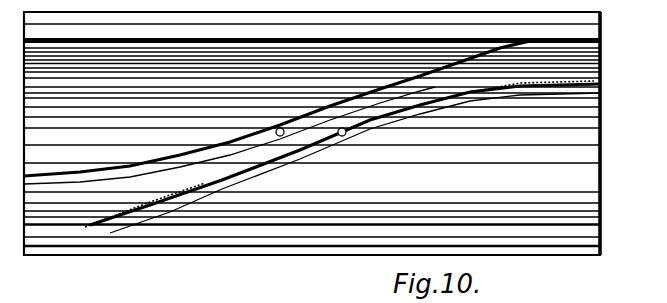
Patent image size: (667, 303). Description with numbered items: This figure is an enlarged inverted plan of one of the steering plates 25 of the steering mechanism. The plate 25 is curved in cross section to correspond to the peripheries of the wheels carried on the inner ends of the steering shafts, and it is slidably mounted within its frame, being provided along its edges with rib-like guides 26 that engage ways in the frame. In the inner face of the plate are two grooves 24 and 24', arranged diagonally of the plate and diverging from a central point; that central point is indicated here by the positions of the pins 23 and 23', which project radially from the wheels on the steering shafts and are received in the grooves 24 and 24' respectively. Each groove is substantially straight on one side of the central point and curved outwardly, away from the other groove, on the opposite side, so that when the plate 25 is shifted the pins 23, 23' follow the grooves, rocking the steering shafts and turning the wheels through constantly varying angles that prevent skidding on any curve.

The pin 23 is at (360, 139).
The pin 23' is at (289, 153).
The groove 24 is at (342, 157).
The groove 24' is at (312, 112).
The steering plate 25 is at (571, 187).
The rib-like guide 26 is at (600, 13).